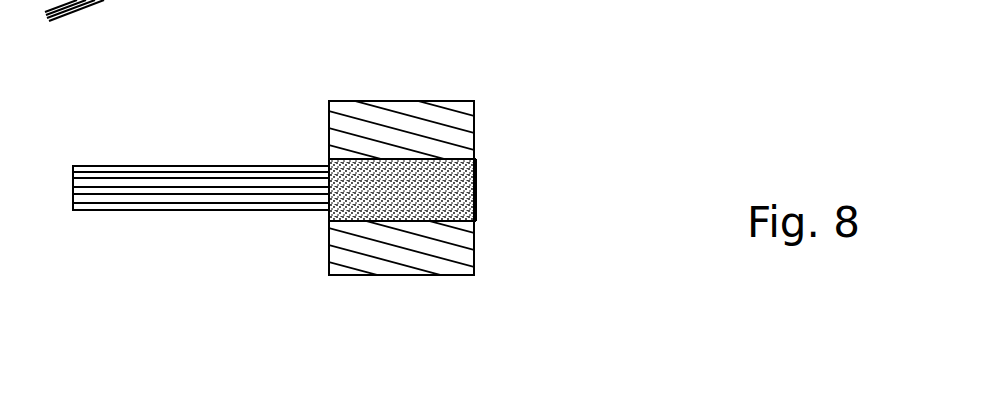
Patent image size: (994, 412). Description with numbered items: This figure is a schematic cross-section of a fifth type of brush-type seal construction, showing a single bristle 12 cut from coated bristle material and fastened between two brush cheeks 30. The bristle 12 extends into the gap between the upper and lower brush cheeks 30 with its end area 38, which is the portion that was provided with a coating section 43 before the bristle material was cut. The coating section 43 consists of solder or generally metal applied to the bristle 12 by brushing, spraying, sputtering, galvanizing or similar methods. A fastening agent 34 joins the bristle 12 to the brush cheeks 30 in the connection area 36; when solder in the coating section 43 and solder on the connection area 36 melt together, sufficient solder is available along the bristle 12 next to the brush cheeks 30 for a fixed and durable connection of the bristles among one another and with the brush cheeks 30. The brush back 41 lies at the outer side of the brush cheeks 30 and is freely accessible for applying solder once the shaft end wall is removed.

The bristle 12 is at (157, 185).
The brush cheek 30 is at (367, 115).
The fastening agent 34 is at (314, 153).
The connection area 36 is at (584, 168).
The end area 38 is at (384, 230).
The brush back 41 is at (515, 174).
The coating section 43 is at (338, 209).